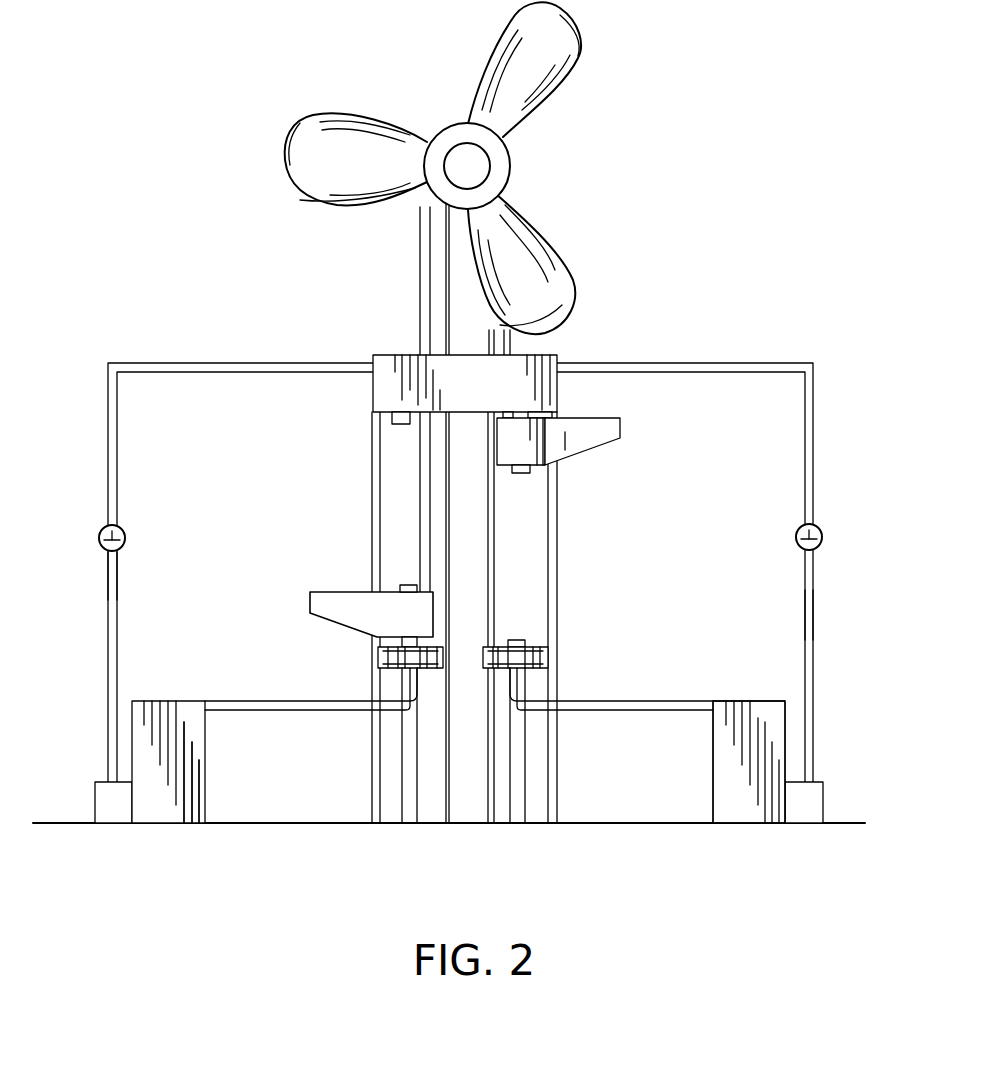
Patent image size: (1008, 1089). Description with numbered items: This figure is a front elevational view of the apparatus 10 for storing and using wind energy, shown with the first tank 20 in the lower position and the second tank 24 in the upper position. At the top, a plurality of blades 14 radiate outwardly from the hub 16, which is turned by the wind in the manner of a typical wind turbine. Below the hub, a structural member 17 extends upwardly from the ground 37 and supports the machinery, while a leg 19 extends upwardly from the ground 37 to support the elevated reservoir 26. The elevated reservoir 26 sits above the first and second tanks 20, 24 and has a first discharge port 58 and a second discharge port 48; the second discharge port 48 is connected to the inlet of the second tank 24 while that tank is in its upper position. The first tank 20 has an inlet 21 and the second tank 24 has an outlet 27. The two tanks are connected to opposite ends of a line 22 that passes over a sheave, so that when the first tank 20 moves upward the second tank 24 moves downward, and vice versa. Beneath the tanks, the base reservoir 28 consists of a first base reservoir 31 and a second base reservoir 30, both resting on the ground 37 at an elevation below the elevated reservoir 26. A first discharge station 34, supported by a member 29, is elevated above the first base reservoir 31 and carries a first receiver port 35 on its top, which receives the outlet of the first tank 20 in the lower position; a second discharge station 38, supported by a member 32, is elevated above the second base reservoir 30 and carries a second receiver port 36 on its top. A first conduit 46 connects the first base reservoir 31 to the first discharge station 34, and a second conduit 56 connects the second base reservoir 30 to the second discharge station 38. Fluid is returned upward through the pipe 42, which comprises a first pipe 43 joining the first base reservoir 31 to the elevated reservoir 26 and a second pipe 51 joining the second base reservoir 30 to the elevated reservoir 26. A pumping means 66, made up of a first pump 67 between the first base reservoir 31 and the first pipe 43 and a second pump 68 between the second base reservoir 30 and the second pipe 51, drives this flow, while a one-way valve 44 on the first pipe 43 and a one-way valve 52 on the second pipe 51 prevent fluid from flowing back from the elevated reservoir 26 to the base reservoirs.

The apparatus 10 is at (673, 320).
The blades 14 is at (575, 52).
The hub 16 is at (462, 138).
The structural member 17 is at (490, 533).
The leg 19 is at (372, 520).
The first tank 20 is at (318, 606).
The inlet 21 is at (407, 584).
The line 22 is at (432, 136).
The second tank 24 is at (598, 434).
The elevated reservoir 26 is at (388, 364).
The outlet 27 is at (518, 475).
The base reservoir 28 is at (174, 812).
The member 29 is at (410, 814).
The second base reservoir 30 is at (745, 812).
The first base reservoir 31 is at (197, 786).
The member 32 is at (520, 814).
The first discharge station 34 is at (380, 660).
The first receiver port 35 is at (417, 645).
The second receiver port 36 is at (516, 638).
The ground 37 is at (605, 818).
The second discharge station 38 is at (548, 660).
The pipe 42 is at (110, 633).
The first pipe 43 is at (108, 578).
The one-way valve 44 is at (100, 536).
The first conduit 46 is at (288, 704).
The second discharge port 48 is at (553, 414).
The second pipe 51 is at (813, 612).
The one-way valve 52 is at (822, 536).
The second conduit 56 is at (606, 705).
The first discharge port 58 is at (406, 426).
The pumping means 66 is at (62, 764).
The first pump 67 is at (108, 803).
The second pump 68 is at (815, 794).